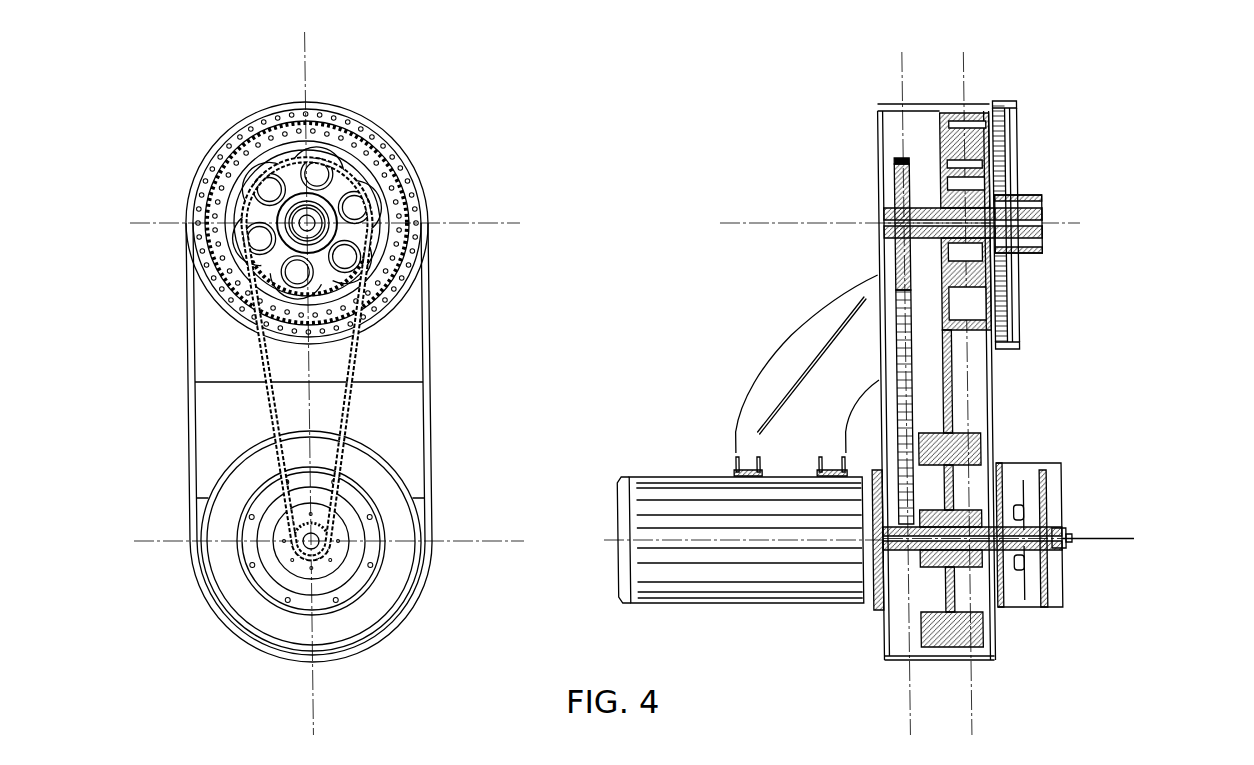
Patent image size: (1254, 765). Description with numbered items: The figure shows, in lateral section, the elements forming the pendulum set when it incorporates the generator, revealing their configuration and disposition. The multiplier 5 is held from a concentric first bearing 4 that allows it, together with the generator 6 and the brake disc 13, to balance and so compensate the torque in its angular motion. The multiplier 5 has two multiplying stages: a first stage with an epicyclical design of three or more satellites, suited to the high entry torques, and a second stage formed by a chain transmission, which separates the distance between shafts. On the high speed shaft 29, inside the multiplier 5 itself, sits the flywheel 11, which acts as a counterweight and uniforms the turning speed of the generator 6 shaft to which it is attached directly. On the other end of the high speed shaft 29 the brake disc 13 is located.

The first bearing 4 is at (1007, 130).
The multiplier 5 is at (895, 128).
The generator 6 is at (730, 505).
The flywheel 11 is at (980, 635).
The brake disc 13 is at (1060, 467).
The high speed shaft 29 is at (1130, 538).